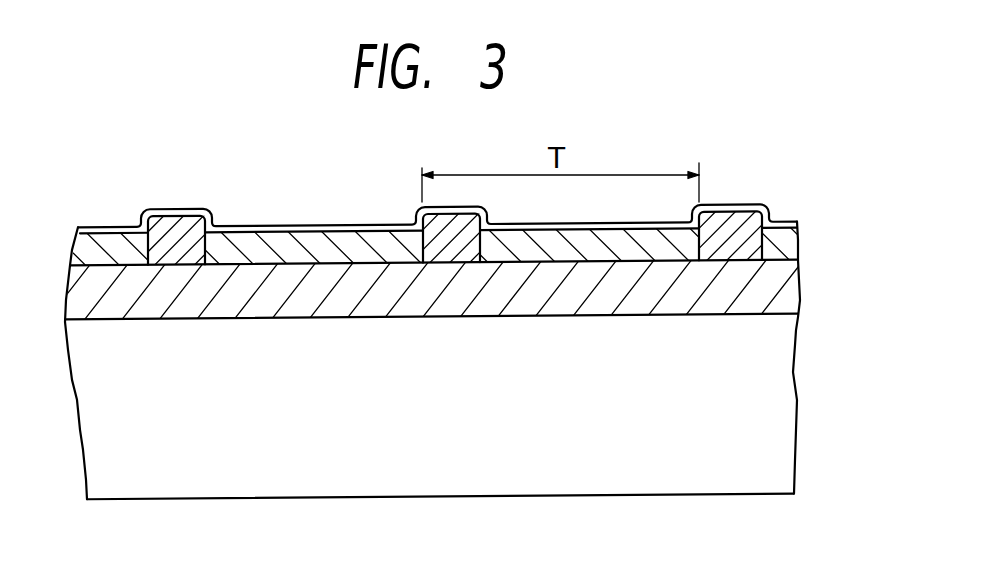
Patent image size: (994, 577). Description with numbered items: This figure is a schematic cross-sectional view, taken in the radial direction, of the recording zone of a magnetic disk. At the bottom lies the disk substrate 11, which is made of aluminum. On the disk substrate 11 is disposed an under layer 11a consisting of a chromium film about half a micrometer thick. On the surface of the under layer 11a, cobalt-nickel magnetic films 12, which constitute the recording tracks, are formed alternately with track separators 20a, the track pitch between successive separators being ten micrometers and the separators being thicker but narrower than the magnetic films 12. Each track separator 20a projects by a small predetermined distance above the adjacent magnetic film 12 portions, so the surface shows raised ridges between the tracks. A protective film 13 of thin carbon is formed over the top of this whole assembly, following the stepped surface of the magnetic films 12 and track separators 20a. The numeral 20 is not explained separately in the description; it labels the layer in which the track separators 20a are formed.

The disk substrate 11 is at (787, 372).
The under layer 11a is at (793, 275).
The magnetic film 12 is at (333, 236).
The protective film 13 is at (369, 223).
The electrode layer 20 is at (290, 247).
The track separator 20a is at (185, 222).